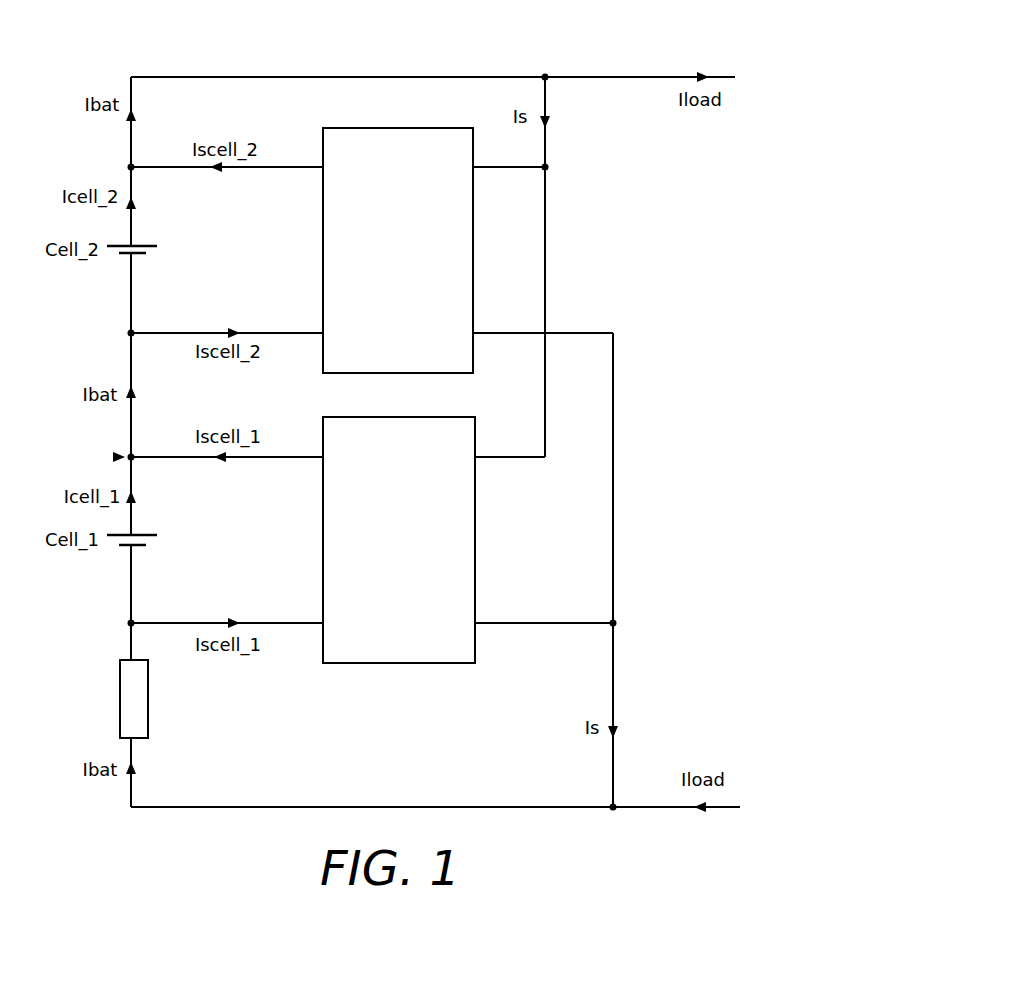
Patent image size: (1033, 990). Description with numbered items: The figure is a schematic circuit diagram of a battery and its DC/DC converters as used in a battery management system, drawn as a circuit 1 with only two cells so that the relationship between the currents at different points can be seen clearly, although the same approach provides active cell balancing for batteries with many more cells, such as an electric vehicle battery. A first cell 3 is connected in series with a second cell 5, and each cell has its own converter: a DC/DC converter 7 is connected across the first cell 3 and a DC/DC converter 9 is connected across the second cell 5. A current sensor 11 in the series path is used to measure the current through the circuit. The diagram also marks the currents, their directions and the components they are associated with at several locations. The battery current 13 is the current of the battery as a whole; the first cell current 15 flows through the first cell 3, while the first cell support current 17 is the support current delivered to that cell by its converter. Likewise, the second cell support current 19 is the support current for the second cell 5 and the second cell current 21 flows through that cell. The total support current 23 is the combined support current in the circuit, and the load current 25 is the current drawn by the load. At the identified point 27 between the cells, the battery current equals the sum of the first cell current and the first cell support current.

The circuit 1 is at (98, 822).
The first cell 3 is at (139, 547).
The second cell 5 is at (139, 255).
The DC/DC converter 7 is at (399, 540).
The DC/DC converter 9 is at (398, 250).
The current sensor 11 is at (118, 672).
The battery current 13 is at (137, 115).
The first cell current 15 is at (137, 497).
The first cell support current 17 is at (226, 462).
The second cell support current 19 is at (234, 328).
The second cell current 21 is at (137, 203).
The total support current 23 is at (550, 122).
The load current 25 is at (702, 72).
The identified point 27 is at (113, 457).